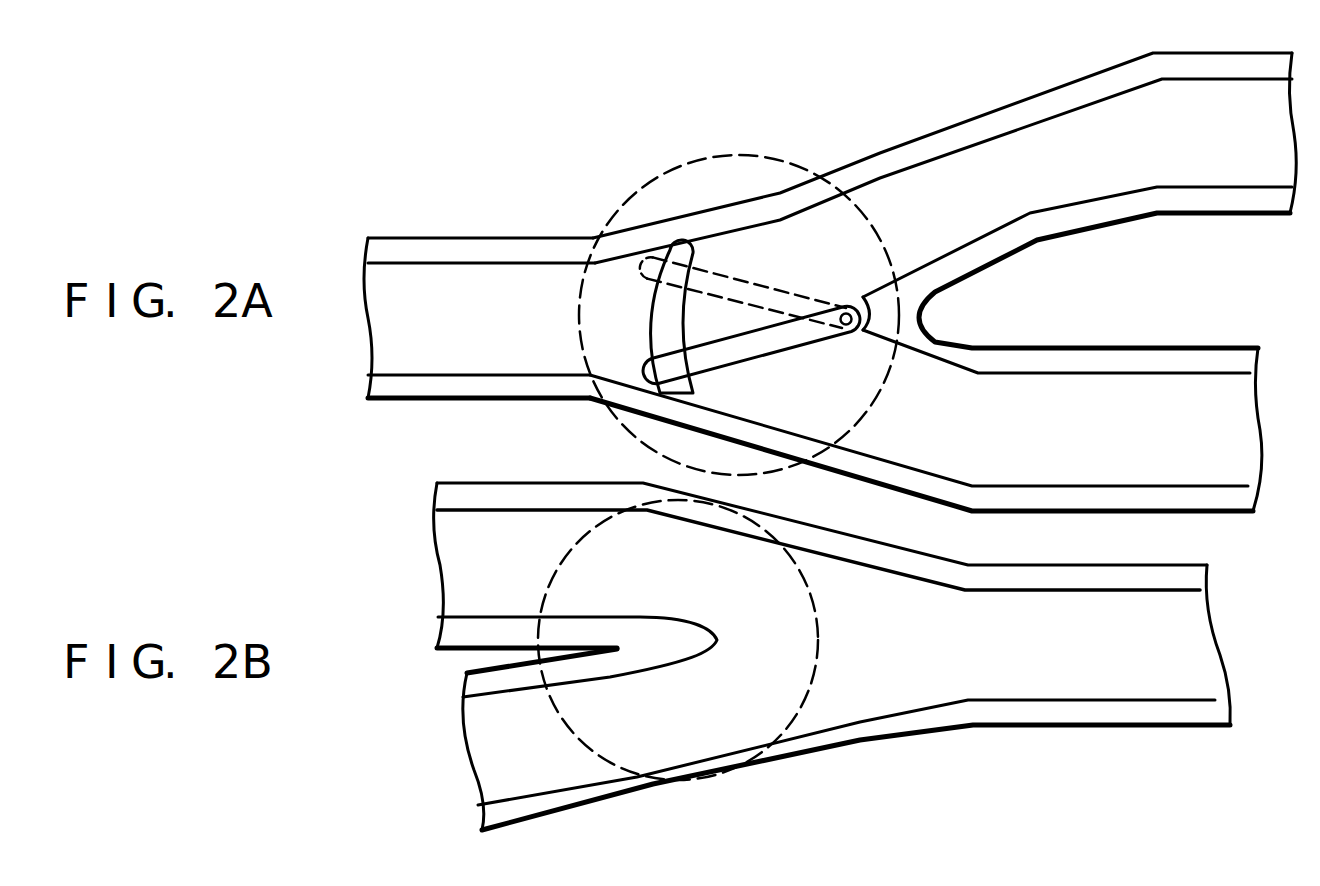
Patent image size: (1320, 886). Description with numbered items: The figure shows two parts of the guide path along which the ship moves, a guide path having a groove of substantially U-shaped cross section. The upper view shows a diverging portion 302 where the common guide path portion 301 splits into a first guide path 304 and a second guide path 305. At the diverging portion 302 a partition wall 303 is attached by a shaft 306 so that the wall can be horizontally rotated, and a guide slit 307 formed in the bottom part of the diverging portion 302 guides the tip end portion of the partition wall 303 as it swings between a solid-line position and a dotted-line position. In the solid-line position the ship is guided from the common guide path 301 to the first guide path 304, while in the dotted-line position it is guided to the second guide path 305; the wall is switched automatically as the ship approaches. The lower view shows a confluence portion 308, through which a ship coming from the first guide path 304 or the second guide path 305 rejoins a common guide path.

In FIG. 2A, the common guide path portion 301 is at (448, 273).
In FIG. 2A, the diverging portion 302 is at (727, 157).
In FIG. 2A, the partition wall 303 is at (757, 337).
In FIG. 2A, the first guide path 304 is at (1056, 118).
In FIG. 2B, the first guide path 304 is at (492, 523).
In FIG. 2A, the second guide path 305 is at (1082, 471).
In FIG. 2B, the second guide path 305 is at (584, 774).
In FIG. 2A, the shaft 306 is at (848, 331).
In FIG. 2A, the guide slit 307 is at (650, 331).
In FIG. 2B, the confluence portion 308 is at (812, 690).